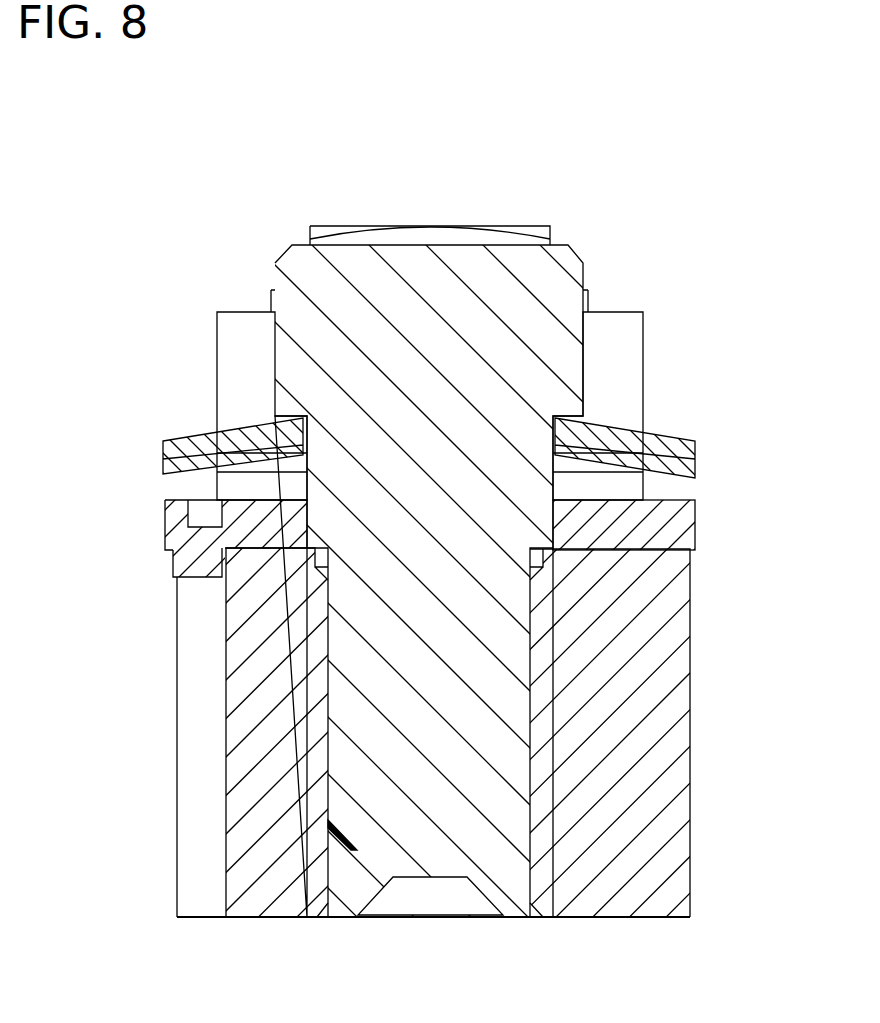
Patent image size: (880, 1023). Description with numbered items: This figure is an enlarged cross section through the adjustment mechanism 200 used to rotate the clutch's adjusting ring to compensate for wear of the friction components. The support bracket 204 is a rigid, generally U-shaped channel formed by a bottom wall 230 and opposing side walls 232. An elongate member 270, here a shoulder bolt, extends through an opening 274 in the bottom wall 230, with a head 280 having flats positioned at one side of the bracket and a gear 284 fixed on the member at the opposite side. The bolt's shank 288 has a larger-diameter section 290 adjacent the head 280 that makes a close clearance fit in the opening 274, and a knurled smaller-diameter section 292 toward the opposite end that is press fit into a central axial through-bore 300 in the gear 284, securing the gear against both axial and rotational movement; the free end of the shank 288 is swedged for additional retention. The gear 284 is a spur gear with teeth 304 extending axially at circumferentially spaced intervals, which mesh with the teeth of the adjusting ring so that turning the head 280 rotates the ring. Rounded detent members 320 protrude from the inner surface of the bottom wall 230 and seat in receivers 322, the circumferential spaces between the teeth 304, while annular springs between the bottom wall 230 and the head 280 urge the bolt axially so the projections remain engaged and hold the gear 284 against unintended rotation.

The adjustment mechanism 200 is at (640, 108).
The support bracket 204 is at (705, 500).
The bottom wall 230 is at (682, 537).
The side walls 232 is at (243, 340).
The elongate member 270 is at (535, 783).
The opening 274 is at (335, 535).
The head 280 is at (560, 272).
The gear 284 is at (672, 707).
The shank 288 is at (530, 890).
The larger-diameter section 290 is at (305, 478).
The smaller-diameter section 292 is at (328, 757).
The central axial through-bore 300 is at (355, 852).
The teeth 304 is at (177, 872).
The detent members 320 is at (192, 578).
The receivers 322 is at (210, 694).